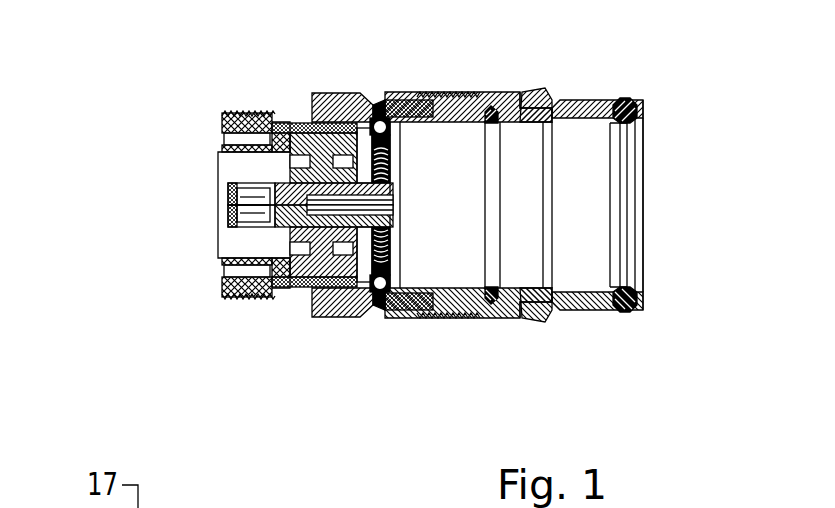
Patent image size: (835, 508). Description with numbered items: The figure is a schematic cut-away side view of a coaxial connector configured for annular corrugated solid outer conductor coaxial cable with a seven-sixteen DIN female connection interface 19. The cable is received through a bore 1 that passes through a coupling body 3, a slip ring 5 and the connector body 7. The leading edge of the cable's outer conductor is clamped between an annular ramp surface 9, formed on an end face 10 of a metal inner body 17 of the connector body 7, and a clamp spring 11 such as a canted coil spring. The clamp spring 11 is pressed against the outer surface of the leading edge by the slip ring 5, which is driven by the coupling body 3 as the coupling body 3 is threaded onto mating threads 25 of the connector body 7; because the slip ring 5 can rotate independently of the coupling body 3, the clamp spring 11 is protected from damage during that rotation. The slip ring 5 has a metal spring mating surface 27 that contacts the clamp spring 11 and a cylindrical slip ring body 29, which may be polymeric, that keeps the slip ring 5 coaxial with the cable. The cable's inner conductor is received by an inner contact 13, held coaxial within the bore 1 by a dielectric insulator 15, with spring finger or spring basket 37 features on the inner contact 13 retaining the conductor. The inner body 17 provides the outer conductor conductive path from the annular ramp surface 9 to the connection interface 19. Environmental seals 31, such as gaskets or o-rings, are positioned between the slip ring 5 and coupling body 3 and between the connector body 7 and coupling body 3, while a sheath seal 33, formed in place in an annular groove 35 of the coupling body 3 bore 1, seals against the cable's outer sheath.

The bore 1 is at (522, 203).
The coupling body 3 is at (590, 98).
The slip ring 5 is at (450, 157).
The connector body 7 is at (313, 93).
The annular ramp surface 9 is at (363, 293).
The end face 10 is at (360, 123).
The clamp spring 11 is at (381, 118).
The inner contact 13 is at (250, 197).
The dielectric insulator 15 is at (315, 285).
The inner body 17 is at (223, 112).
The connection interface 19 is at (207, 237).
The mating threads 25 is at (460, 320).
The spring mating surface 27 is at (400, 110).
The cylindrical slip ring body 29 is at (472, 320).
The environmental seal 31 is at (513, 323).
The sheath seal 33 is at (630, 313).
The annular groove 35 is at (627, 100).
The spring basket 37 is at (370, 208).